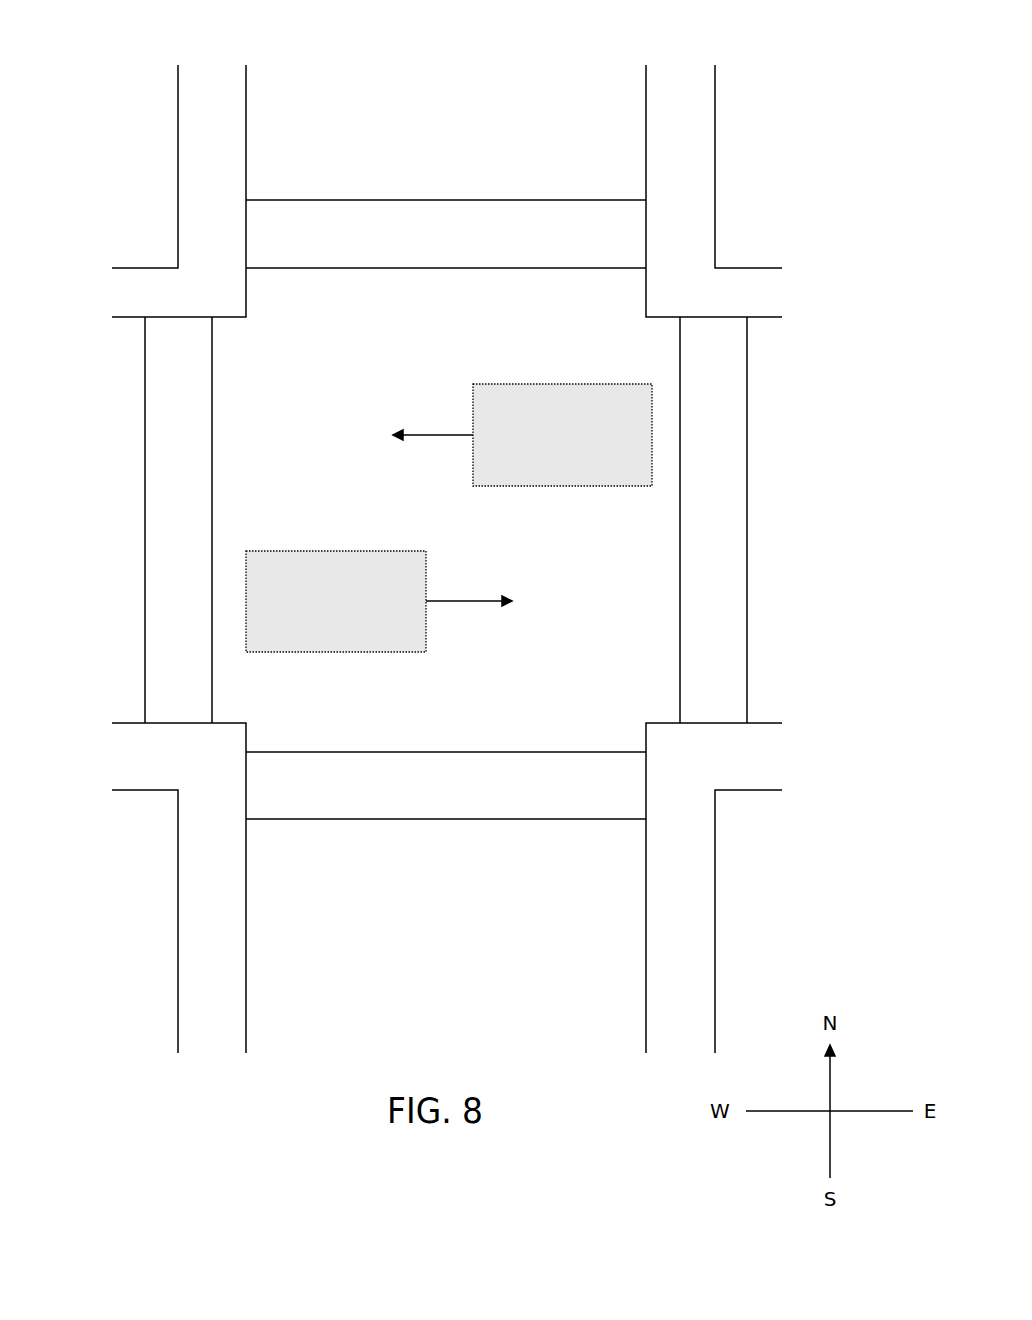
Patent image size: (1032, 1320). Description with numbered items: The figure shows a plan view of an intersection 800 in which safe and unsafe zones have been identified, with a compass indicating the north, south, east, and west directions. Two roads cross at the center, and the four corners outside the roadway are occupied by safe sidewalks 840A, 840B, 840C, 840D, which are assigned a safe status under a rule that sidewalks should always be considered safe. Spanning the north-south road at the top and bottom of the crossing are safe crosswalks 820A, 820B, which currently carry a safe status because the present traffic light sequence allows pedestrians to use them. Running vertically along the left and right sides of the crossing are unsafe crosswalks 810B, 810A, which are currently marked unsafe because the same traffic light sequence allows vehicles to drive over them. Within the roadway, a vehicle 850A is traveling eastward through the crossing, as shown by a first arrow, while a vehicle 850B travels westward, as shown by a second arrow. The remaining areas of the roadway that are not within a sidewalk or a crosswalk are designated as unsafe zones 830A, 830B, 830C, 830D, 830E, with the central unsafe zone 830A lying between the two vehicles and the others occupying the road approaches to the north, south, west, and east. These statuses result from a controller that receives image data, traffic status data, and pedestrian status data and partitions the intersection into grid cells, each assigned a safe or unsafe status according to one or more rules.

The intersection 800 is at (422, 102).
The unsafe crosswalk 810A is at (747, 563).
The unsafe crosswalk 810B is at (145, 607).
The safe crosswalk 820A is at (446, 234).
The safe crosswalk 820B is at (446, 785).
The unsafe zone 830A is at (396, 499).
The unsafe zone 830B is at (513, 128).
The unsafe zone 830C is at (440, 974).
The unsafe zone 830D is at (78, 496).
The unsafe zone 830E is at (812, 513).
The safe sidewalk 840A is at (178, 103).
The safe sidewalk 840B is at (715, 138).
The safe sidewalk 840C is at (160, 792).
The safe sidewalk 840D is at (743, 790).
The vehicle 850A is at (379, 601).
The vehicle 850B is at (522, 435).